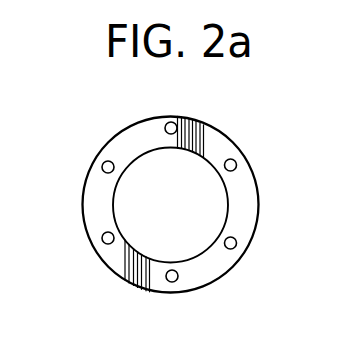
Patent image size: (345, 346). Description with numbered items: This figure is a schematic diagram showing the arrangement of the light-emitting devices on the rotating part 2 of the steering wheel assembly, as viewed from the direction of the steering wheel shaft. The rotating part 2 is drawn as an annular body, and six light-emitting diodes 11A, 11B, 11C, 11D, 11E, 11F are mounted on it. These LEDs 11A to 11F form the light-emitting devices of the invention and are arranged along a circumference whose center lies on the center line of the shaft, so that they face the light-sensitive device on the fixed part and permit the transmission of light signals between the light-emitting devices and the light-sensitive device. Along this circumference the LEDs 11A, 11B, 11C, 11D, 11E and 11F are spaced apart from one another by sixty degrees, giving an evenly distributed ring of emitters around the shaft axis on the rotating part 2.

The rotating part 2 is at (218, 129).
The light-emitting diode 11A is at (171, 122).
The light-emitting diode 11B is at (237, 165).
The light-emitting diode 11C is at (237, 246).
The light-emitting diode 11D is at (172, 282).
The light-emitting diode 11E is at (102, 243).
The light-emitting diode 11F is at (102, 166).